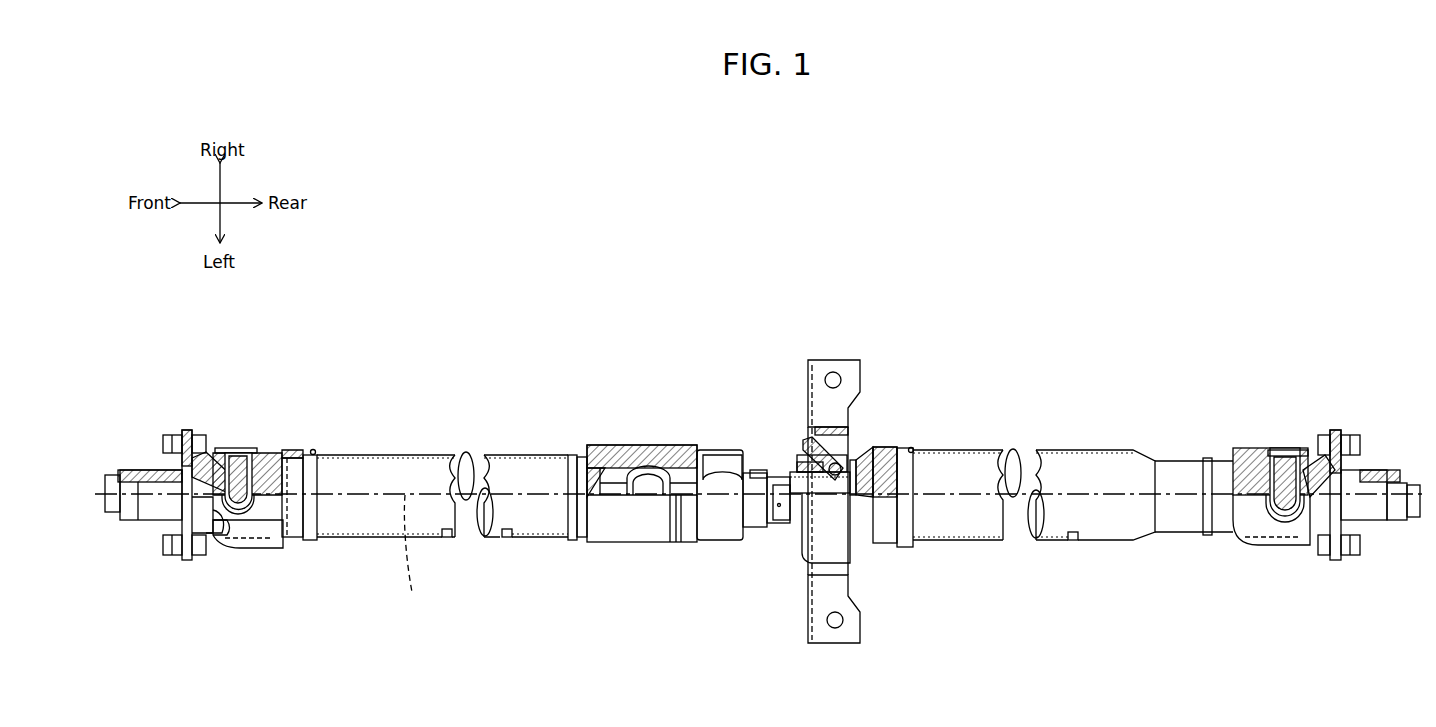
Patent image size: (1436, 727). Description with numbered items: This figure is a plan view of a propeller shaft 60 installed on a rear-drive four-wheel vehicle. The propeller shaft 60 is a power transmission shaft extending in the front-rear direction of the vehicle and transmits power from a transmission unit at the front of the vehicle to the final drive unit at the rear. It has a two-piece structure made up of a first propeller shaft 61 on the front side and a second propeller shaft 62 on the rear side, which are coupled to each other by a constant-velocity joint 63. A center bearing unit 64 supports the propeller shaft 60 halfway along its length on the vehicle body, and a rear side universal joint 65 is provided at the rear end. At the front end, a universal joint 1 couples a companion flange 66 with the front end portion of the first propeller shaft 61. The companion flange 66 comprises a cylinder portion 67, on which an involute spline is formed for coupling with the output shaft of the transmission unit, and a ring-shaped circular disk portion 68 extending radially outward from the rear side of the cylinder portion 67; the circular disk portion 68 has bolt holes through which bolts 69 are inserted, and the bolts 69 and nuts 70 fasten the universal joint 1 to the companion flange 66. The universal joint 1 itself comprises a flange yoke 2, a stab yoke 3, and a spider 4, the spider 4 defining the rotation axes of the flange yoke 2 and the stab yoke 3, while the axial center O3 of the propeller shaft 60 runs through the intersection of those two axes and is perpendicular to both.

The propeller shaft 60 is at (685, 328).
The first propeller shaft 61 is at (384, 452).
The second propeller shaft 62 is at (1086, 448).
The constant-velocity joint 63 is at (793, 452).
The center bearing unit 64 is at (862, 412).
The rear side universal joint 65 is at (1285, 446).
The companion flange 66 is at (164, 459).
The cylinder portion 67 is at (126, 469).
The circular disk portion 68 is at (184, 430).
The bolts 69 is at (200, 440).
The nuts 70 is at (173, 436).
The universal joint 1 is at (242, 440).
The flange yoke 2 is at (200, 522).
The stab yoke 3 is at (258, 540).
The spider 4 is at (212, 535).
The axial center O3 is at (408, 557).